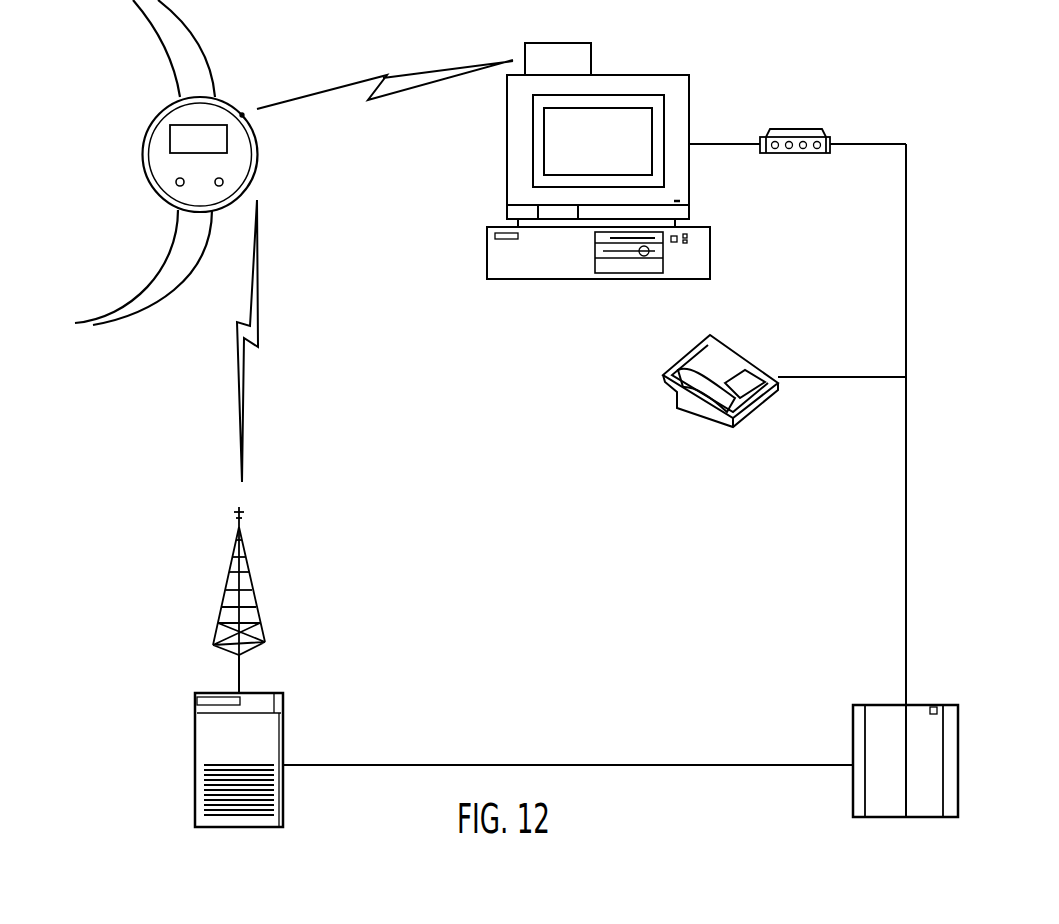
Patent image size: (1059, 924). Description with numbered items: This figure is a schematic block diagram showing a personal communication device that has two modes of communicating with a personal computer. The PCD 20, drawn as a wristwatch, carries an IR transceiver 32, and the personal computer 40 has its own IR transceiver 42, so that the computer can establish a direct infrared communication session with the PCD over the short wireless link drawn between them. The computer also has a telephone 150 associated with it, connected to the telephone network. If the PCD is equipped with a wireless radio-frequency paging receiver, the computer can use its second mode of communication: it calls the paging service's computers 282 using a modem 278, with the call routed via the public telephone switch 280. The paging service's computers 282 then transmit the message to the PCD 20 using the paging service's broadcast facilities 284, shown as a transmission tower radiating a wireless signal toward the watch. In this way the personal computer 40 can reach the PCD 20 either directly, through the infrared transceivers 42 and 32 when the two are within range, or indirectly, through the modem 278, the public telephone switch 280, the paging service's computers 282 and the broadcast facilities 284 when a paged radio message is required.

The PCD 20 is at (223, 103).
The IR transceiver 32 is at (243, 116).
The personal computer 40 is at (689, 90).
The IR transceiver 42 is at (591, 57).
The modem 278 is at (805, 130).
The telephone 150 is at (727, 353).
The broadcast facilities 284 is at (257, 607).
The paging service's computers 282 is at (283, 731).
The public telephone switch 280 is at (853, 718).